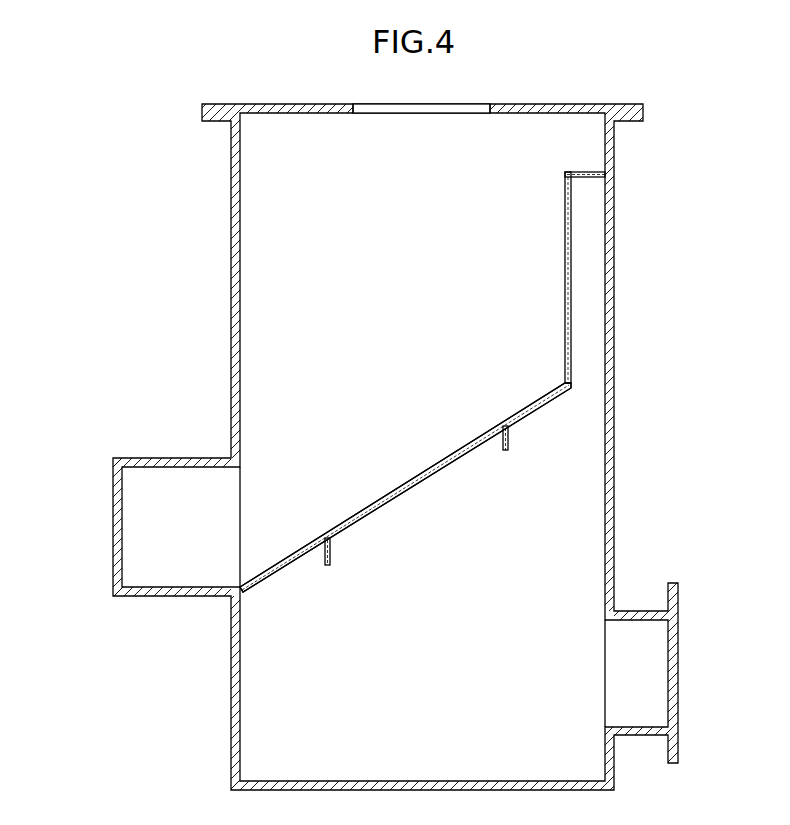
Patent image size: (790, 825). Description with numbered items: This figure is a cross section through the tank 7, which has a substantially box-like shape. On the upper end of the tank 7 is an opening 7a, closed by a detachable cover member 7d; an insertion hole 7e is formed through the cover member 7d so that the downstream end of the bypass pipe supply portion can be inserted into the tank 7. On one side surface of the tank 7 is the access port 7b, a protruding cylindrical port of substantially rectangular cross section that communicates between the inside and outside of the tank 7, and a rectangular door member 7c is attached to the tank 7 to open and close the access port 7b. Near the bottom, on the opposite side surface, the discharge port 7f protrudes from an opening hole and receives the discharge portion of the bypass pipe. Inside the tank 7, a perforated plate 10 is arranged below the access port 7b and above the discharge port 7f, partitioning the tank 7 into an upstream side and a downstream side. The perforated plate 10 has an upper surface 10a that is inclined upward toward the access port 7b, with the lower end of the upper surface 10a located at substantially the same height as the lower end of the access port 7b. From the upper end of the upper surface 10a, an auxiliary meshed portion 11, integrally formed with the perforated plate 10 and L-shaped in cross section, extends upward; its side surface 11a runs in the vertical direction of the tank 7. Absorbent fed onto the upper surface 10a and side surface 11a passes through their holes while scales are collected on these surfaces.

The tank 7 is at (211, 282).
The opening 7a is at (241, 118).
The access port 7b is at (172, 458).
The door member 7c is at (113, 525).
The cover member 7d is at (208, 108).
The insertion hole 7e is at (490, 107).
The discharge port 7f is at (640, 611).
The perforated plate 10 is at (527, 403).
The upper surface 10a is at (408, 482).
The auxiliary meshed portion 11 is at (590, 170).
The side surface 11a is at (565, 235).